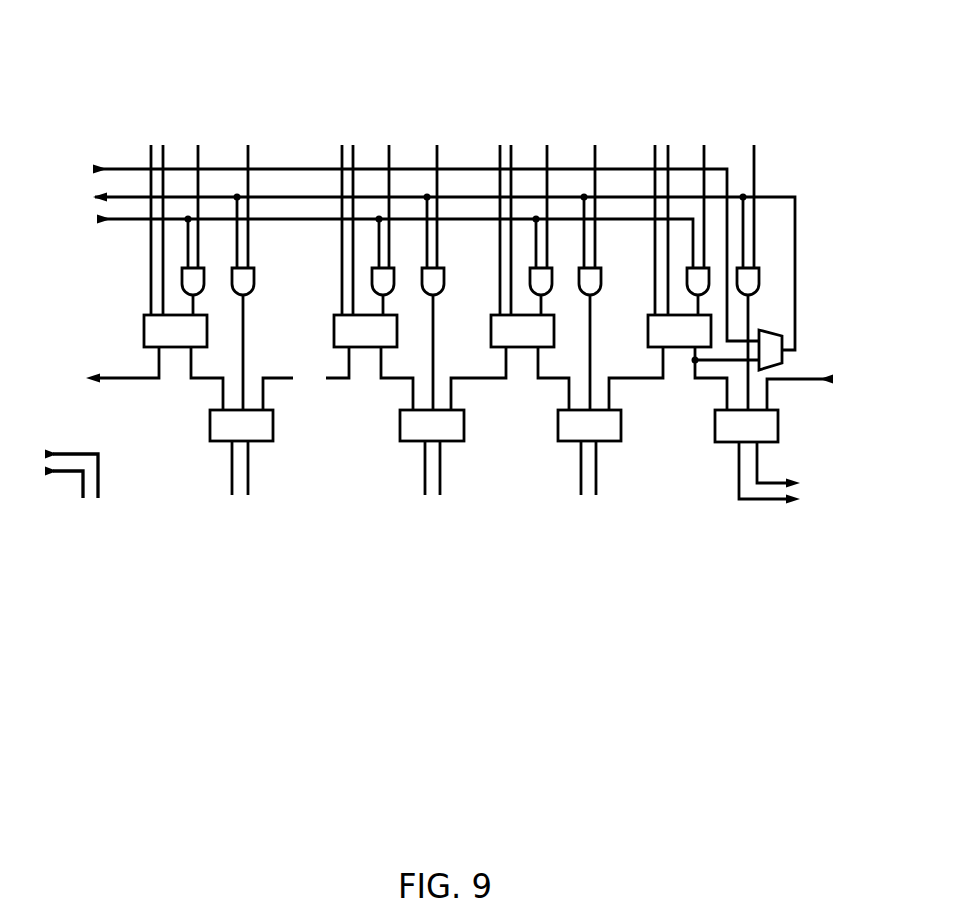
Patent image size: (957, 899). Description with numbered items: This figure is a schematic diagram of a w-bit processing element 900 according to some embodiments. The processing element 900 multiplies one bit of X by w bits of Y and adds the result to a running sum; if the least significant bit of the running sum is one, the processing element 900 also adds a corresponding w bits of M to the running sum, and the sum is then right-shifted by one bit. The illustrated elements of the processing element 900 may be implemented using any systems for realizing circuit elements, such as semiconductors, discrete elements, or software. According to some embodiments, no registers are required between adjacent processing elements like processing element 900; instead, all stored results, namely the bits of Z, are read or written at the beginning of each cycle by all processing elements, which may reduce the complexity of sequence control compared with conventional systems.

The processing element 900 is at (330, 57).